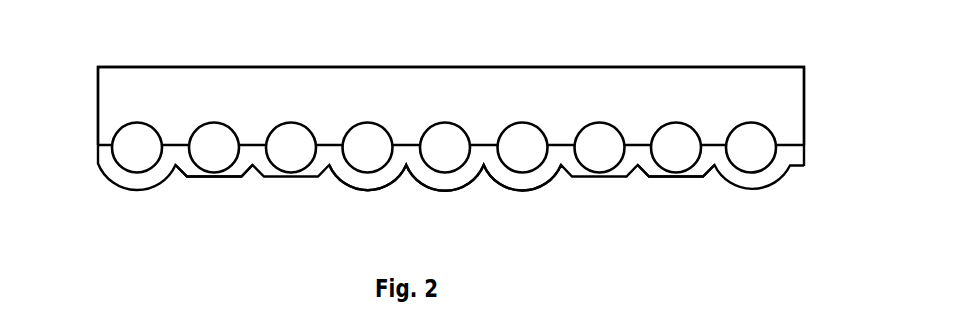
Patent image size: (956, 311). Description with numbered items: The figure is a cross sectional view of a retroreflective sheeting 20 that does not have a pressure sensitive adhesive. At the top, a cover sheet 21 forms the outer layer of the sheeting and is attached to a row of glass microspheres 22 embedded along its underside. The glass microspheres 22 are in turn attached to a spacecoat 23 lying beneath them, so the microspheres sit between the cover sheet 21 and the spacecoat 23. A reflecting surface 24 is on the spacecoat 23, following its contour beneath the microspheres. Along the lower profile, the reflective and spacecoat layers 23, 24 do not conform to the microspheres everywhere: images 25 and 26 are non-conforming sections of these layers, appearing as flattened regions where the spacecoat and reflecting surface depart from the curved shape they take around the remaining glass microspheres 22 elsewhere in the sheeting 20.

The retroreflective sheeting 20 is at (451, 96).
The cover sheet 21 is at (784, 101).
The glass microspheres 22 is at (757, 142).
The spacecoat 23 is at (777, 164).
The reflecting surface 24 is at (531, 188).
The image 25 is at (208, 180).
The image 26 is at (683, 178).